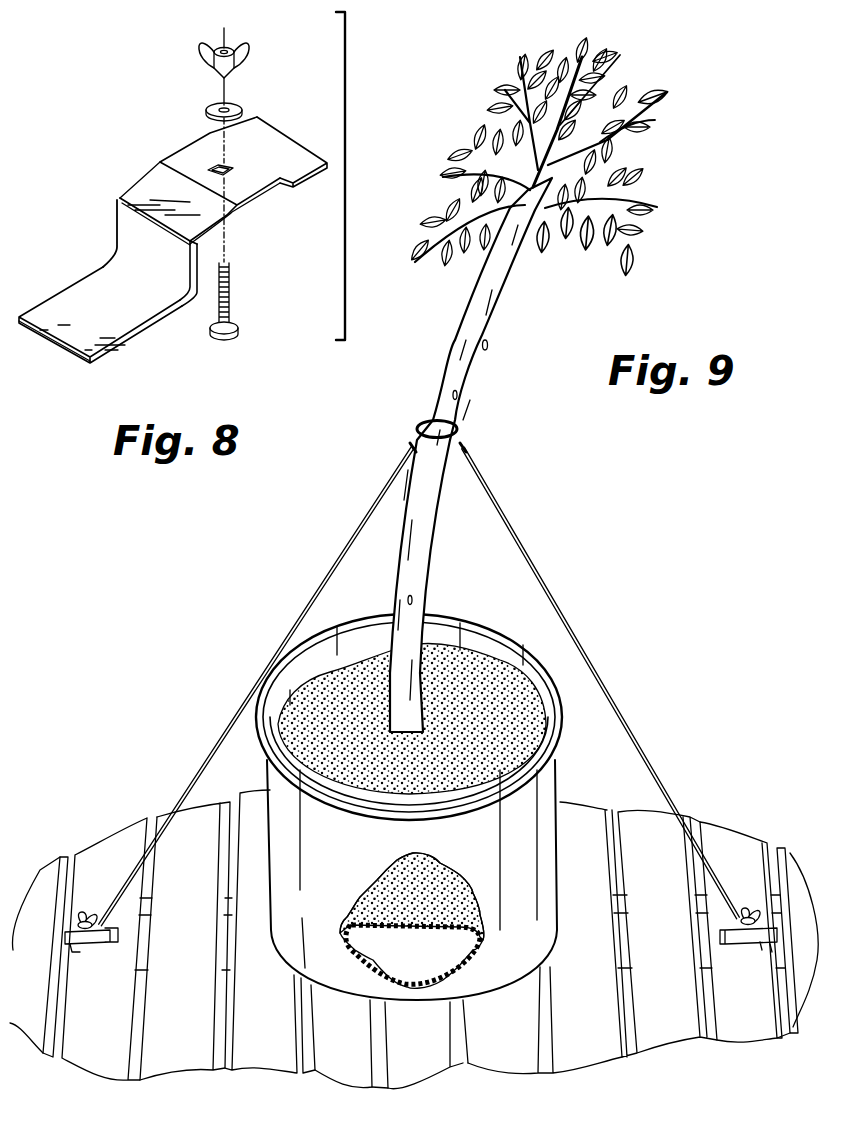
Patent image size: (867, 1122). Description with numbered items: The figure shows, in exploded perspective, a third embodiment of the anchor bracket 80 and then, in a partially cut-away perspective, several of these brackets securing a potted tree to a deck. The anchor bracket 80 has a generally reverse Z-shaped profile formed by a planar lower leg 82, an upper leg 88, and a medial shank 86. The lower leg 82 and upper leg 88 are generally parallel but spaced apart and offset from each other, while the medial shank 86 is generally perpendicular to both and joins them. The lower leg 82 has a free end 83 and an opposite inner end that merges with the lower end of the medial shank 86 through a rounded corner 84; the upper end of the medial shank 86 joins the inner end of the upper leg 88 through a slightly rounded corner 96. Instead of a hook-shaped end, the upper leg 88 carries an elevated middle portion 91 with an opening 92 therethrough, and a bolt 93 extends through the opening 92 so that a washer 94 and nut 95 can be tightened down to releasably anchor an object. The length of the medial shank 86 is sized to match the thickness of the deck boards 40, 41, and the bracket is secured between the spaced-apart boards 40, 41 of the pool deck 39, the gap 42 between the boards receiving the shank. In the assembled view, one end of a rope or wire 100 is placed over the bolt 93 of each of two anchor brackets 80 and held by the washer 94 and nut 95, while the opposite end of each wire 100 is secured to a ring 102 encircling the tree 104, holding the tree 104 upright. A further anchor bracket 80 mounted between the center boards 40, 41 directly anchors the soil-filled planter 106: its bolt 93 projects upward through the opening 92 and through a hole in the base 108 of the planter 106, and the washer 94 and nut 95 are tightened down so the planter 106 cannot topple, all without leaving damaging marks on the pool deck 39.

In FIG. 8, the anchor bracket 80 is at (126, 91).
In FIG. 9, the anchor bracket 80 is at (88, 909).
In FIG. 8, the lower leg 82 is at (103, 301).
In FIG. 8, the free end 83 is at (76, 359).
In FIG. 8, the rounded corner 84 is at (192, 298).
In FIG. 8, the medial shank 86 is at (156, 248).
In FIG. 8, the upper leg 88 is at (275, 147).
In FIG. 8, the elevated middle portion 91 is at (176, 161).
In FIG. 8, the opening 92 is at (217, 164).
In FIG. 8, the bolt 93 is at (233, 303).
In FIG. 8, the washer 94 is at (238, 106).
In FIG. 8, the nut 95 is at (245, 49).
In FIG. 8, the rounded corner 96 is at (117, 199).
In FIG. 9, the pool deck 39 is at (124, 831).
In FIG. 9, the deck board 40 is at (40, 978).
In FIG. 9, the deck board 41 is at (104, 1015).
In FIG. 9, the gap between deck boards 42 is at (146, 935).
In FIG. 9, the rope or wire 100 is at (367, 516).
In FIG. 9, the ring 102 is at (433, 410).
In FIG. 9, the tree 104 is at (489, 326).
In FIG. 9, the planter 106 is at (362, 855).
In FIG. 9, the base 108 is at (443, 932).